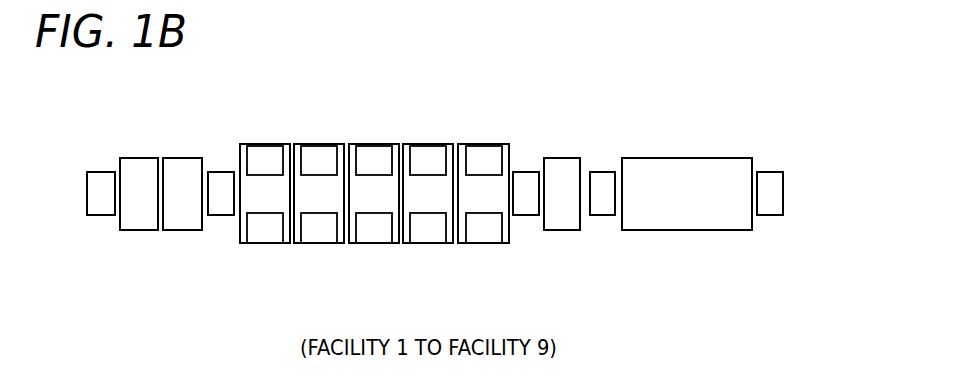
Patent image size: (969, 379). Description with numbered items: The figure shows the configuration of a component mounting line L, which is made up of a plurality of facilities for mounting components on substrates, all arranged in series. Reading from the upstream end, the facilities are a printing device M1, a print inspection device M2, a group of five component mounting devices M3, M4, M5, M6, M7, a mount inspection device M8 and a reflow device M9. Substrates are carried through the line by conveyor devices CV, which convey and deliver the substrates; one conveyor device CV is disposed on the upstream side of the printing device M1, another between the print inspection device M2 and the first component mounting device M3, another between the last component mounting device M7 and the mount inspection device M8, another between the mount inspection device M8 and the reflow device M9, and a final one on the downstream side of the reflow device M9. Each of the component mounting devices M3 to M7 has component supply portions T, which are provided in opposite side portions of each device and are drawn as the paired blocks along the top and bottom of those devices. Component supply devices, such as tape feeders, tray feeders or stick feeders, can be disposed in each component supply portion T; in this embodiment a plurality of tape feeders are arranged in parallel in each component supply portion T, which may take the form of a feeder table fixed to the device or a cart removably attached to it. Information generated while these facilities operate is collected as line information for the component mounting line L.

The component mounting line L is at (414, 70).
The conveyor device CV is at (106, 172).
The component supply portion T is at (322, 145).
The printing device M1 is at (140, 243).
The print inspection device M2 is at (186, 243).
The component mounting device M3 is at (266, 253).
The component mounting device M4 is at (322, 253).
The component mounting device M5 is at (376, 253).
The component mounting device M6 is at (430, 253).
The component mounting device M7 is at (484, 253).
The mount inspection device M8 is at (562, 241).
The reflow device M9 is at (688, 241).